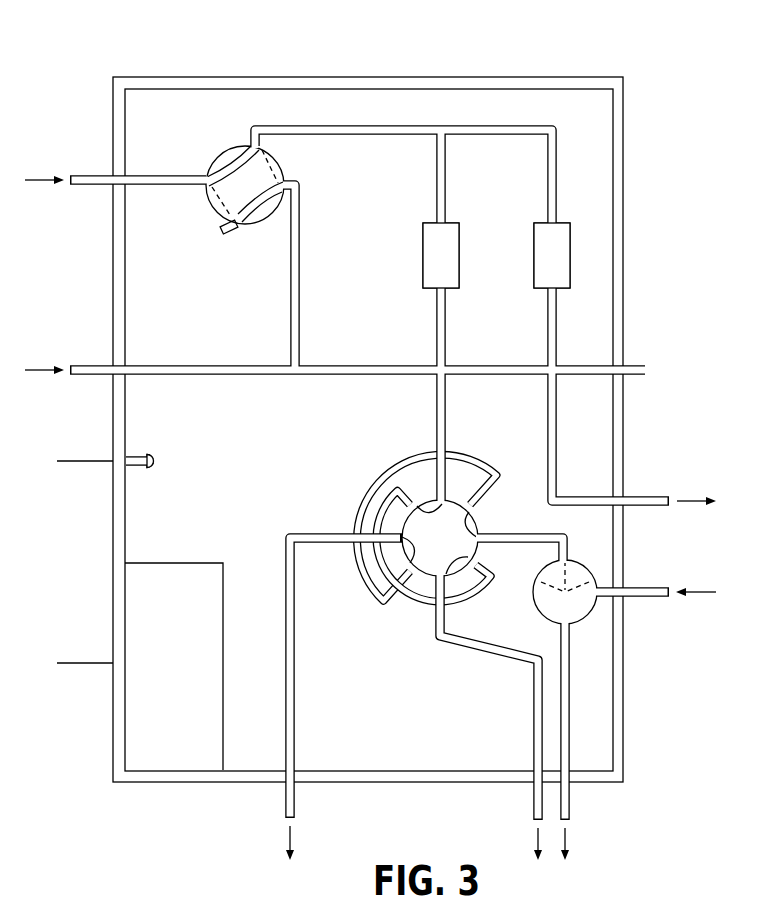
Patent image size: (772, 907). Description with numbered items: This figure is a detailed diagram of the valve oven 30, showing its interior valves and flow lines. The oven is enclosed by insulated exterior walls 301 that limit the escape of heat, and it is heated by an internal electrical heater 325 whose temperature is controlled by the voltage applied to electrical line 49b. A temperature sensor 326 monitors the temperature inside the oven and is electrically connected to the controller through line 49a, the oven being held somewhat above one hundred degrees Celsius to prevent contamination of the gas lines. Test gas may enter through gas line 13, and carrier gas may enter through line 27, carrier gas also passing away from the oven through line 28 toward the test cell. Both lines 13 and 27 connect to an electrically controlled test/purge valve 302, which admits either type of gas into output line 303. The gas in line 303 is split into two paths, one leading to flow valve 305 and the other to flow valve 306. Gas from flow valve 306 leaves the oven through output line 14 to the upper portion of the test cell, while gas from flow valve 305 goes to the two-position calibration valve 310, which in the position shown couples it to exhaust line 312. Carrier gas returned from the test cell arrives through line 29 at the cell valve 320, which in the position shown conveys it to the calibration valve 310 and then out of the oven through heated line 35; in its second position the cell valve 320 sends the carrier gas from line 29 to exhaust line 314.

The gas line 13 is at (95, 176).
The output line 14 is at (641, 497).
The line 27 is at (93, 365).
The line 28 is at (632, 366).
The line 29 is at (639, 589).
The valve oven 30 is at (430, 74).
The heated line 35 is at (299, 806).
The line 49a is at (83, 459).
The electrical line 49b is at (82, 661).
The exterior walls 301 is at (275, 78).
The test/purge valve 302 is at (209, 210).
The output line 303 is at (346, 129).
The flow valve 305 is at (423, 264).
The flow valve 306 is at (533, 256).
The calibration valve 310 is at (437, 562).
The exhaust line 312 is at (529, 806).
The exhaust line 314 is at (572, 796).
The cell valve 320 is at (531, 583).
The electrical heater 325 is at (197, 689).
The temperature sensor 326 is at (158, 458).